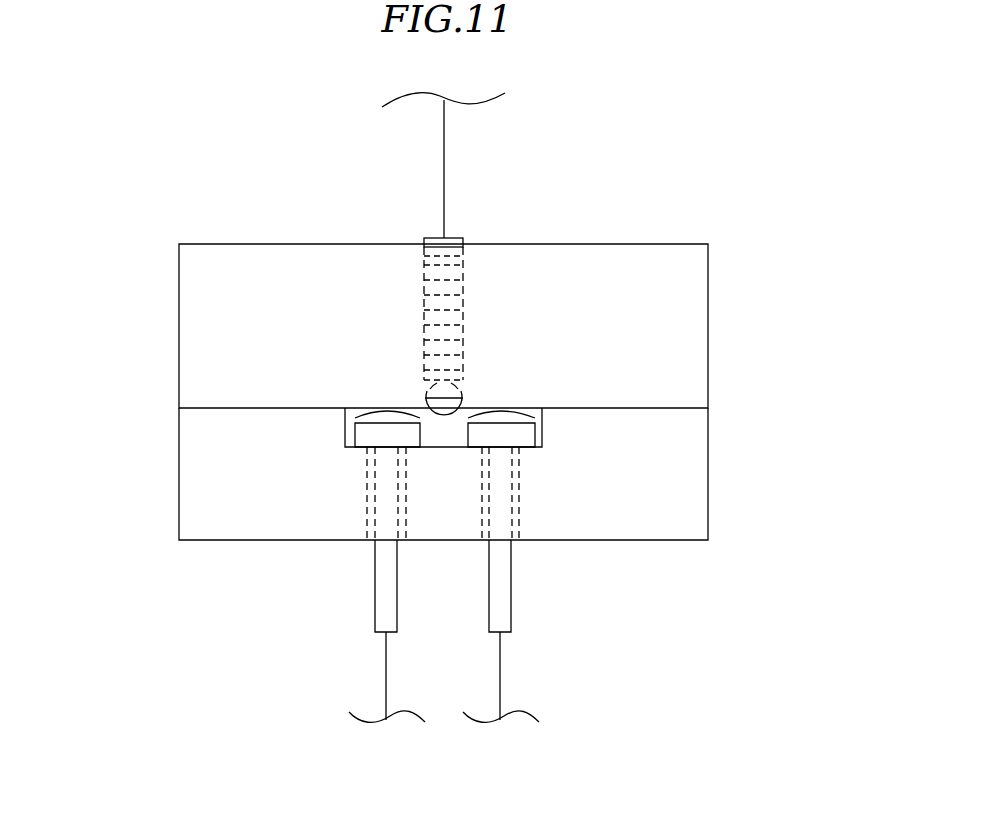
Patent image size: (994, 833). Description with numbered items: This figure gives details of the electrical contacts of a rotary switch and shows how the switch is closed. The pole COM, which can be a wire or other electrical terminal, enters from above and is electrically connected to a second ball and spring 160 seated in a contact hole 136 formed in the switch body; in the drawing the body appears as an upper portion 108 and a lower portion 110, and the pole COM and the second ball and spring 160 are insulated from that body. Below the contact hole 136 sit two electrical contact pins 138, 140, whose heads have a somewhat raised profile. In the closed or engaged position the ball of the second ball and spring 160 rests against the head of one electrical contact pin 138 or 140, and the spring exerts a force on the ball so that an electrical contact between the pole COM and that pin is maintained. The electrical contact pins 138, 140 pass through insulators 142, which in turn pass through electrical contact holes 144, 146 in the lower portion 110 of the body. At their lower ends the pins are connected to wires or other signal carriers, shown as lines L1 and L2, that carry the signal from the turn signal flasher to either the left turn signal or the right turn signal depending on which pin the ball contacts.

The upper housing 108 is at (652, 330).
The lower housing / base 110 is at (652, 472).
The contact hole 136 is at (465, 242).
The electrical contact pin 138 is at (385, 417).
The electrical contact pin 140 is at (510, 416).
The insulators 142 is at (372, 430).
The electrical contact hole 144 is at (375, 540).
The electrical contact hole 146 is at (512, 540).
The second ball and spring 160 is at (462, 379).
The pole COM is at (444, 160).
The first line L1 is at (386, 675).
The second line L2 is at (500, 675).